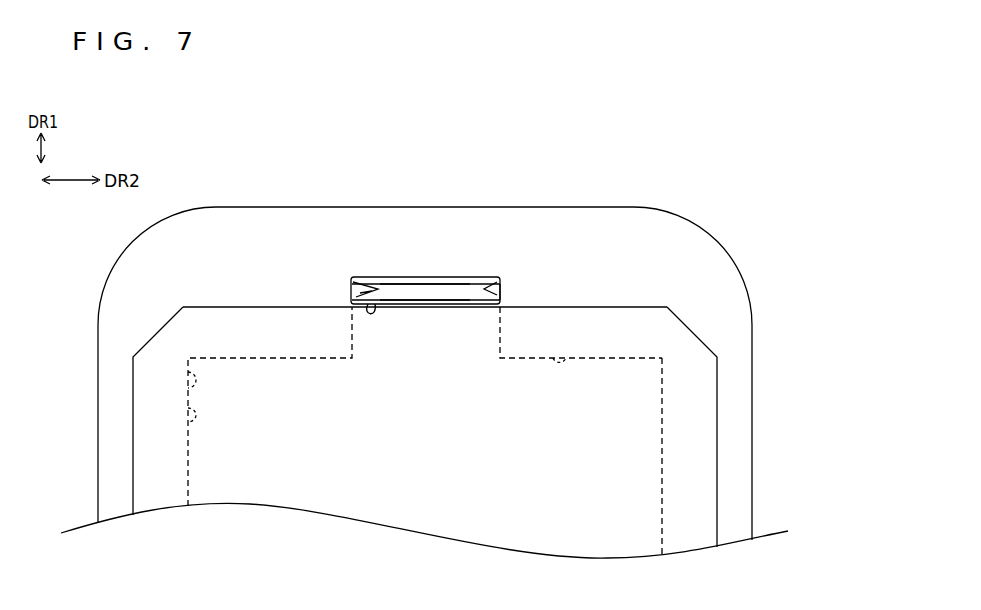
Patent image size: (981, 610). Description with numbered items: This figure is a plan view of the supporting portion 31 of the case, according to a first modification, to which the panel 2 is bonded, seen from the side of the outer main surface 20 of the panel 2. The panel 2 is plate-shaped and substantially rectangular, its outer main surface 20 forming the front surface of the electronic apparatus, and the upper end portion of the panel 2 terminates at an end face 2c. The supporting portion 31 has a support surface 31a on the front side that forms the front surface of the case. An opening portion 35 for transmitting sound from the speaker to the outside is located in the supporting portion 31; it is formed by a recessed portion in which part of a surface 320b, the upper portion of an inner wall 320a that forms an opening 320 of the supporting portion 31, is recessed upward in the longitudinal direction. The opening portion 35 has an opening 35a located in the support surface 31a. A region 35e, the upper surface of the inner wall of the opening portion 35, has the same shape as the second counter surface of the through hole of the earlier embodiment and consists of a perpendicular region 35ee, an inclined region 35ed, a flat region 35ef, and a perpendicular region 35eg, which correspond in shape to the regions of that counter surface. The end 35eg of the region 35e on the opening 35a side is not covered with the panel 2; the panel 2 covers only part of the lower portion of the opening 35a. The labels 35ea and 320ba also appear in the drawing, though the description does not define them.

The panel 2 is at (700, 420).
The outer main surface 20 is at (700, 480).
The end face 2c is at (224, 304).
The supporting portion 31 is at (686, 236).
The support surface 31a is at (110, 282).
The opening portion 35 is at (351, 284).
The opening 35a is at (500, 282).
The region 35e is at (535, 151).
The connection portion part 35ea is at (353, 278).
The perpendicular region 35ee is at (377, 298).
The inclined region 35ed is at (396, 291).
The flat region 35ef is at (449, 283).
The perpendicular region 35eg is at (478, 280).
The opening 320 is at (188, 428).
The inner wall 320a is at (188, 392).
The surface 320b is at (565, 352).
The groove side portion 320ba is at (625, 357).